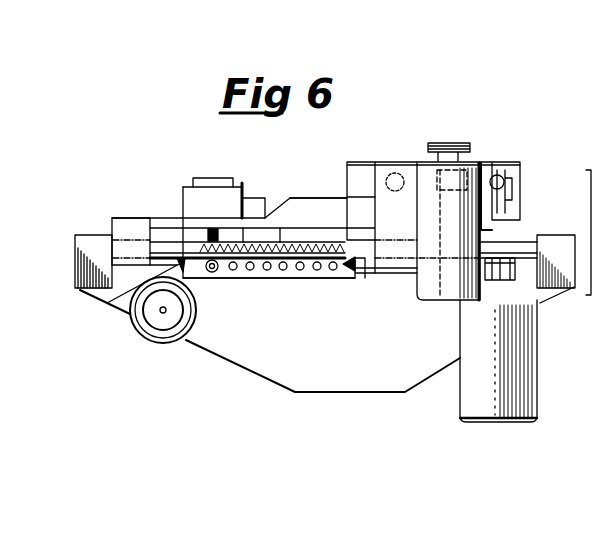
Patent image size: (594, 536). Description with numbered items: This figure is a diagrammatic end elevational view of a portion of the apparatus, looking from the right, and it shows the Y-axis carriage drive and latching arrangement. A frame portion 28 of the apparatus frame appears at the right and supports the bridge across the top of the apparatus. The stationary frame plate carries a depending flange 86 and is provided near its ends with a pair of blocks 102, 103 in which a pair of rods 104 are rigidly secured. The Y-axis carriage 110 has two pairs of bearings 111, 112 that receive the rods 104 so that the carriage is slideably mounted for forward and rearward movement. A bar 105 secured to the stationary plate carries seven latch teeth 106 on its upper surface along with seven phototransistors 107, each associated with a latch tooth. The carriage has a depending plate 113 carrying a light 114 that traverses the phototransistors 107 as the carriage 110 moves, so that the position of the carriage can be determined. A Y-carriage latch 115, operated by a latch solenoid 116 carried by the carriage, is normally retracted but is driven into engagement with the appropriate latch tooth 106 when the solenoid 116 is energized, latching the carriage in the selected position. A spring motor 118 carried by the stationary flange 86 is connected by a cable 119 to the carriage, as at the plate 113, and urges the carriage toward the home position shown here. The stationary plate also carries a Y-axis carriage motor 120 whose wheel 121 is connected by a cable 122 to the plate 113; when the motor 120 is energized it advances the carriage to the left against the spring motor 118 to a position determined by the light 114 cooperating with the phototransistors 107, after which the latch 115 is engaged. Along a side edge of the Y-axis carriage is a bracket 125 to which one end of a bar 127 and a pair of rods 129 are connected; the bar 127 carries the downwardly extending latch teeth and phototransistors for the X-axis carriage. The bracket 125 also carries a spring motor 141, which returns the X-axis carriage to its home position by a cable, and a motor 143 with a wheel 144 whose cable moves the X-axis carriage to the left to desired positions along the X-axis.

The frame portion 28 is at (591, 175).
The depending flange 86 is at (285, 378).
The block 102 is at (553, 293).
The block 103 is at (95, 236).
The rods 104 is at (167, 247).
The bar 105 is at (300, 276).
The latch teeth 106 is at (287, 244).
The phototransistors 107 is at (267, 272).
The Y-axis carriage 110 is at (255, 220).
The bearings 111 is at (125, 223).
The bearings 112 is at (400, 269).
The depending plate 113 is at (315, 232).
The light 114 is at (212, 274).
The Y-carriage latch 115 is at (223, 230).
The latch solenoid 116 is at (188, 190).
The spring motor 118 is at (157, 323).
The cable 119 is at (121, 305).
The Y-axis carriage motor 120 is at (538, 386).
The wheel 121 is at (512, 271).
The cable 122 is at (360, 274).
The bracket 125 is at (338, 203).
The bar 127 is at (460, 178).
The rods 129 is at (397, 170).
The spring motor 141 is at (515, 190).
The motor 143 is at (442, 296).
The wheel 144 is at (445, 141).